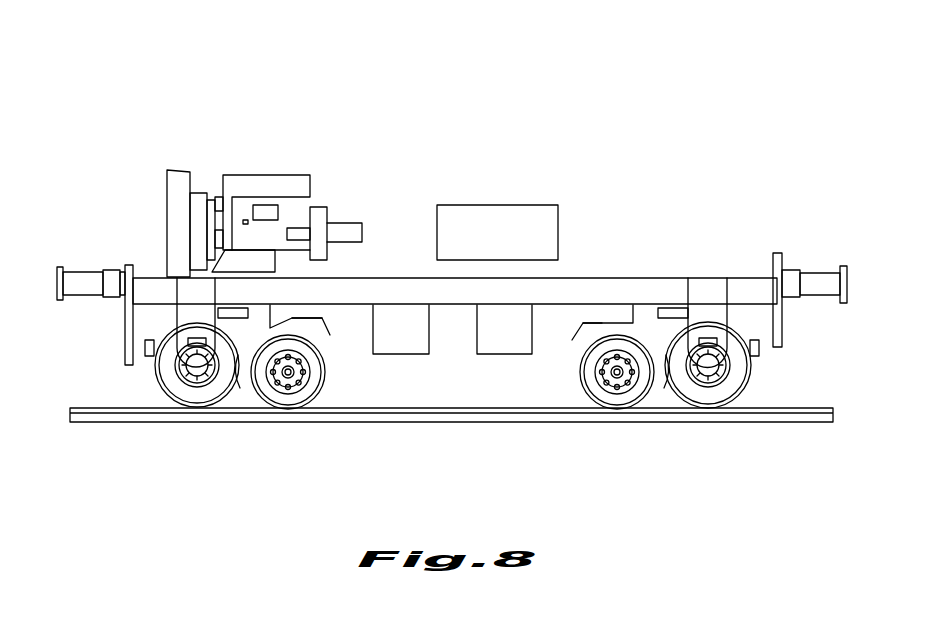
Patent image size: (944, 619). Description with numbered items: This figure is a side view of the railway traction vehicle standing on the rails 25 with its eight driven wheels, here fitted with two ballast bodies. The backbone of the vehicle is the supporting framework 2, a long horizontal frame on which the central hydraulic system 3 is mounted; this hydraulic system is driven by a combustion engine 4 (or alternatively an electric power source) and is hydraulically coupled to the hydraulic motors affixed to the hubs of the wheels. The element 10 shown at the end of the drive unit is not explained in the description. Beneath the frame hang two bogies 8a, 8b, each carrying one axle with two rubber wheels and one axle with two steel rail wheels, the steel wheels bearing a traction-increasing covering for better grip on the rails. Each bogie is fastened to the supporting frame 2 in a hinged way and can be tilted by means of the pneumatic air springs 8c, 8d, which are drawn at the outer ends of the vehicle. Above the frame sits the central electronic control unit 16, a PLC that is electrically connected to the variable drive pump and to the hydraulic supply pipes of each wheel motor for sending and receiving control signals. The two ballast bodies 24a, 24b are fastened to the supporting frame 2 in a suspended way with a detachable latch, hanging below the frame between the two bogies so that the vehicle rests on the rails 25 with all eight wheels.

The supporting framework 2 is at (652, 290).
The central hydraulic system 3 is at (318, 215).
The combustion engine 4 is at (240, 200).
The bogie 8a is at (303, 332).
The bogie 8b is at (603, 330).
The pneumatic air spring 8c is at (148, 352).
The pneumatic air spring 8d is at (758, 352).
The mounting plate 10 is at (175, 218).
The central electronic control unit 16 is at (526, 215).
The ballast body 24a is at (413, 355).
The ballast body 24b is at (500, 355).
The rails 25 is at (113, 415).